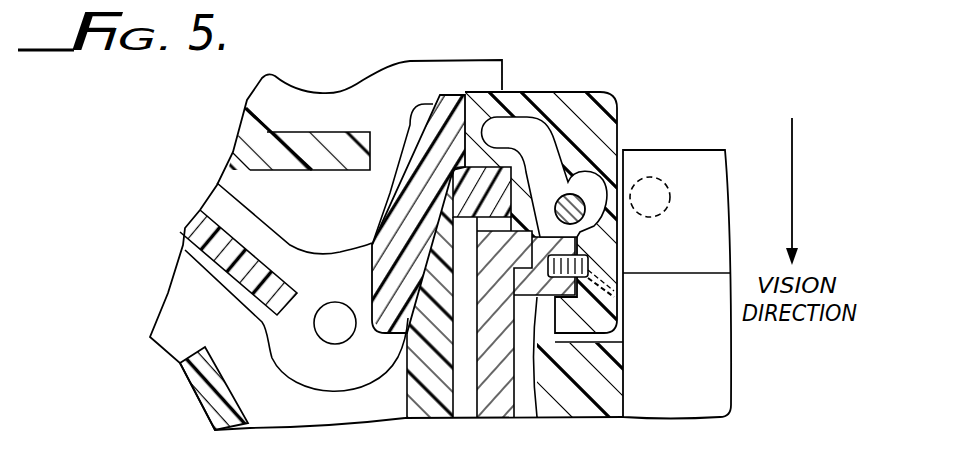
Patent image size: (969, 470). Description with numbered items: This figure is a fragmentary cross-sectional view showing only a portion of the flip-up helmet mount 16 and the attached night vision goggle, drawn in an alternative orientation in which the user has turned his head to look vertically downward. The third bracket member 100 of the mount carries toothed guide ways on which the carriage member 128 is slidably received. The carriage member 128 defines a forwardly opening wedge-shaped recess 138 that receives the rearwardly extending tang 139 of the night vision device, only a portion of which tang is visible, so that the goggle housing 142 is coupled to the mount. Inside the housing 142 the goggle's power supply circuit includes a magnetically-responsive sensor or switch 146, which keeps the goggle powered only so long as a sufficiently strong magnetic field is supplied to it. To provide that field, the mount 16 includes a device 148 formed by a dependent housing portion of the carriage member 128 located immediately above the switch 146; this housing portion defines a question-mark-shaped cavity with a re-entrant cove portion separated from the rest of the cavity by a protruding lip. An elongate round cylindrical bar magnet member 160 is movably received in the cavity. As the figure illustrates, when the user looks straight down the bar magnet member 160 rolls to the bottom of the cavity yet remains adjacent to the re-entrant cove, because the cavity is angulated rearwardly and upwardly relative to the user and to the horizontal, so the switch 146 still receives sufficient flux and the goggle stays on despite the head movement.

The flip-up helmet mount 16 is at (122, 329).
The third bracket member 100 is at (190, 393).
The carriage member 128 is at (383, 223).
The wedge-shaped recess 138 is at (447, 247).
The tang 139 is at (453, 184).
The housing 142 is at (433, 416).
The magnetically-responsive sensor or switch 146 is at (663, 178).
The device 148 is at (591, 72).
The bar magnet member 160 is at (590, 228).